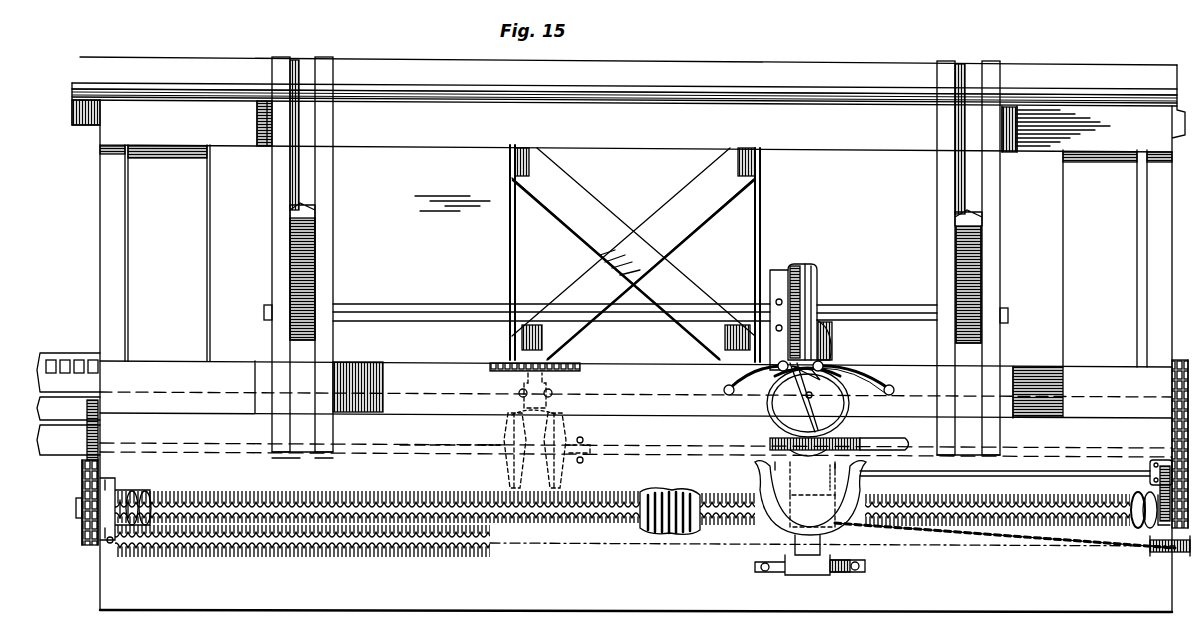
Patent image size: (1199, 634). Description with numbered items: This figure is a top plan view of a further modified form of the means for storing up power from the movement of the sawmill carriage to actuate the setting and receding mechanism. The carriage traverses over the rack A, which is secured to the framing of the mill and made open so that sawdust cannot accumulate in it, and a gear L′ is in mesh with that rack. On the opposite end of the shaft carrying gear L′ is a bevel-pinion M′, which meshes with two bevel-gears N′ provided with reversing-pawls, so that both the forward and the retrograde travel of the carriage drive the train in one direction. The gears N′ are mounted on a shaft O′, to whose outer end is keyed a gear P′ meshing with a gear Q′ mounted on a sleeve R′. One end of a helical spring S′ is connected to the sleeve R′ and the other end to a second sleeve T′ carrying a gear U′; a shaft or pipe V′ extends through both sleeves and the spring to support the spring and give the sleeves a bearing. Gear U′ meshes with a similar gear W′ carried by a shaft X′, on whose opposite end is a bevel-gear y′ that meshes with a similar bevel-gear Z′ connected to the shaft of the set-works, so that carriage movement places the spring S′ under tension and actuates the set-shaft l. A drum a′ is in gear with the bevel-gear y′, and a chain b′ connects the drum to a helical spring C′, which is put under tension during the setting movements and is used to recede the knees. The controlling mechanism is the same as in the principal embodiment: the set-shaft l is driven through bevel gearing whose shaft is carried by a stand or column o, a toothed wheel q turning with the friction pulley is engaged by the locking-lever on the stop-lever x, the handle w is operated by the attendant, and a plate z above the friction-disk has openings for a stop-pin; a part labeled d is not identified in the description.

The rack A is at (66, 358).
The set-shaft l is at (880, 318).
The stand or column o is at (818, 278).
The toothed or spurred wheel q is at (838, 378).
The handle w is at (746, 380).
The stop-lever x is at (799, 397).
The plate z is at (808, 399).
The lever d is at (905, 440).
The gear L′ is at (582, 372).
The bevel-pinion M′ is at (556, 404).
The bevel-gears N′ is at (508, 468).
The shaft O′ is at (415, 452).
The gear P′ is at (90, 463).
The gear Q′ is at (86, 535).
The sleeve R′ is at (130, 490).
The helical spring S′ is at (330, 493).
The helical spring C′ is at (470, 552).
The shaft or pipe V′ is at (660, 490).
The bevel-gear Z′ is at (778, 462).
The bevel-gear y′ is at (812, 478).
The drum a′ is at (810, 535).
The shaft X′ is at (1080, 474).
The gear U′ is at (1152, 492).
The gear W′ is at (1165, 462).
The chain b′ is at (1062, 537).
The second sleeve T′ is at (1150, 530).